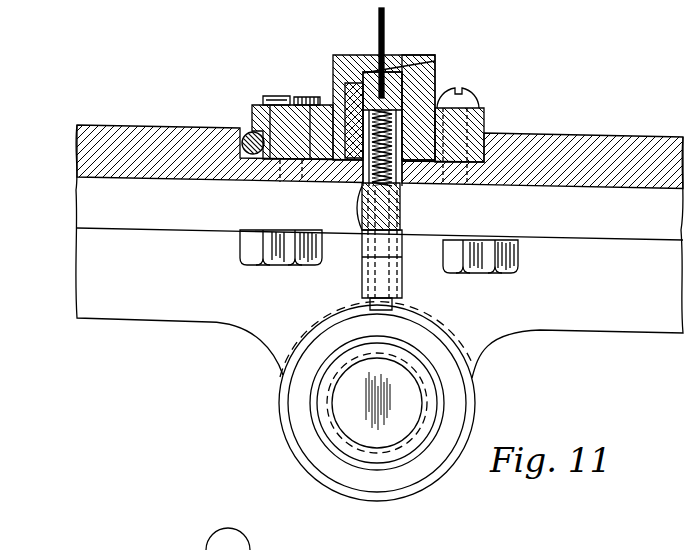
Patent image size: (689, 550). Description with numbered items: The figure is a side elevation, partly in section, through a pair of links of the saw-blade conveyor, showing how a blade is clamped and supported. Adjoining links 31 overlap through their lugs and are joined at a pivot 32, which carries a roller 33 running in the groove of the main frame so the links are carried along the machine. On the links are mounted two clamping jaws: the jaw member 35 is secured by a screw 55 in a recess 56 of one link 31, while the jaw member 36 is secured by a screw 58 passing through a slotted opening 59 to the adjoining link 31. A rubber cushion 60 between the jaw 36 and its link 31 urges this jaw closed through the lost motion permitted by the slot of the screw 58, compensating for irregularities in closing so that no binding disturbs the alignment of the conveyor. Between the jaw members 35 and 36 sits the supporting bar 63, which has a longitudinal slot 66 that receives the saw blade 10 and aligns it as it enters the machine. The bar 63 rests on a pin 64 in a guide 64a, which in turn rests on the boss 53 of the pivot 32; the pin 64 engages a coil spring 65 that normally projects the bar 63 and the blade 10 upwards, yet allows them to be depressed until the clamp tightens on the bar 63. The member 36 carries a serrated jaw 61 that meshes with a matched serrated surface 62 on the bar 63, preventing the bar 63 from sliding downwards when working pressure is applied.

The saw blade 10 is at (386, 55).
The link 31 is at (140, 128).
The pivot 32 is at (412, 388).
The roller 33 is at (290, 464).
The jaw member 35 is at (422, 55).
The jaw member 36 is at (377, 55).
The boss 53 is at (288, 407).
The screw 55 is at (465, 100).
The recess 56 is at (485, 133).
The screw 58 is at (282, 96).
The slotted opening 59 is at (252, 113).
The rubber cushion 60 is at (248, 134).
The serrated jaw 61 is at (347, 90).
The serrated surface 62 is at (365, 55).
The supporting bar 63 is at (400, 212).
The pin 64 is at (395, 303).
The guide 64a is at (367, 291).
The coil spring 65 is at (359, 238).
The longitudinal slot 66 is at (435, 61).